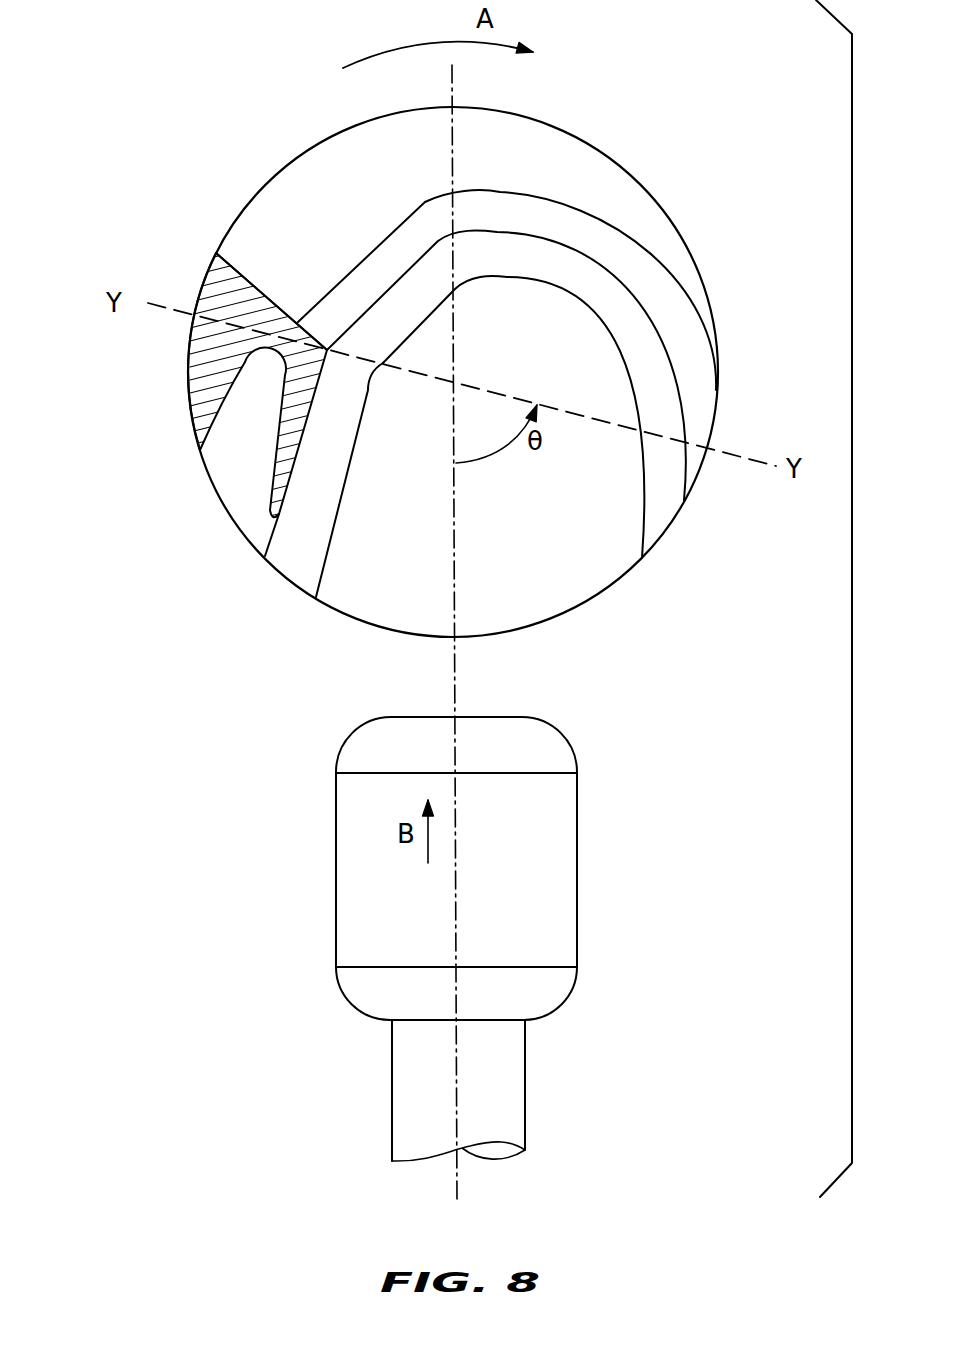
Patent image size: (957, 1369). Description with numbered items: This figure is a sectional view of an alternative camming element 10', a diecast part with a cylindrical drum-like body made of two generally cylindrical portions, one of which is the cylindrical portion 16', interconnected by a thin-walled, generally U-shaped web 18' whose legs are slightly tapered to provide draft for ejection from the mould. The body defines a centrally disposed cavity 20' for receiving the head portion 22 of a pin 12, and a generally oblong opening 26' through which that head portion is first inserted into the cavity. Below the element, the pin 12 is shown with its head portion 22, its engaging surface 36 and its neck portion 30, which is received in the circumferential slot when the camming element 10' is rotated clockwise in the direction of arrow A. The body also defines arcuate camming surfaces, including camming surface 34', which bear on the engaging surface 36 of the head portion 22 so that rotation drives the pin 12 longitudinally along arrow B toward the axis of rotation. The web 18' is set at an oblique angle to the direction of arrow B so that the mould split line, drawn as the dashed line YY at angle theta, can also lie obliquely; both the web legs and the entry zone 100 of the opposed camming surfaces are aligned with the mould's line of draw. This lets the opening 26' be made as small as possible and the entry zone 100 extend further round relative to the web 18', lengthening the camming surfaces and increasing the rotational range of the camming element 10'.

The camming element 10' is at (503, 372).
The cylindrical portion 16' is at (466, 250).
The camming surface 34' is at (569, 365).
The entry zone 100 is at (660, 515).
The web 18' is at (204, 401).
The cavity 20' is at (297, 543).
The opening 26' is at (583, 668).
The head portion 22 is at (550, 868).
The pin 12 is at (600, 951).
The engaging surface 36 is at (383, 992).
The neck portion 30 is at (502, 1088).